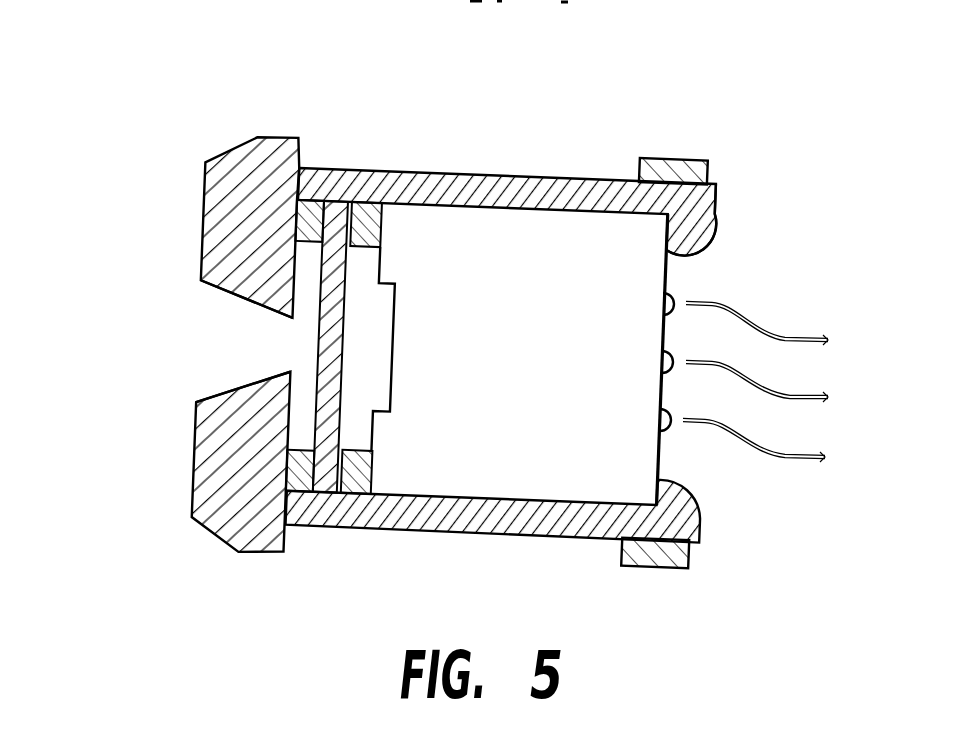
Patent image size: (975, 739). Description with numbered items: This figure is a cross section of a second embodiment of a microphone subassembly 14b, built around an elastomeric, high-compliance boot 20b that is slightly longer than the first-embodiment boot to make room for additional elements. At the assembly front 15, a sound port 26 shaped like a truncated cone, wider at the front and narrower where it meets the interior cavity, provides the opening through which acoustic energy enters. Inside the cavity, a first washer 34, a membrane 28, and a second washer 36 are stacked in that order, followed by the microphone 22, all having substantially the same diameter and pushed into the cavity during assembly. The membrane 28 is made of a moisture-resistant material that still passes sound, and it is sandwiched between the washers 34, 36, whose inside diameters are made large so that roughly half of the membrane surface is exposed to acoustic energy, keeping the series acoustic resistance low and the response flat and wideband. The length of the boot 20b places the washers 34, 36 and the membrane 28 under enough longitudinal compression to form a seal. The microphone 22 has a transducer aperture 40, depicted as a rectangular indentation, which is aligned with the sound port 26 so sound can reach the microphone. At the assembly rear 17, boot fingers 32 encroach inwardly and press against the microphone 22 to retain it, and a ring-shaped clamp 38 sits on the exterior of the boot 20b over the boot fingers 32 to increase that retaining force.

The microphone subassembly 14b is at (436, 315).
The boot 20b is at (458, 328).
The assembly front 15 is at (215, 230).
The sound port 26 is at (213, 343).
The membrane 28 is at (336, 222).
The first washer 34 is at (298, 480).
The second washer 36 is at (356, 483).
The transducer aperture 40 is at (377, 357).
The microphone 22 is at (536, 240).
The clamp 38 is at (672, 170).
The boot fingers 32 is at (697, 228).
The assembly rear 17 is at (658, 453).